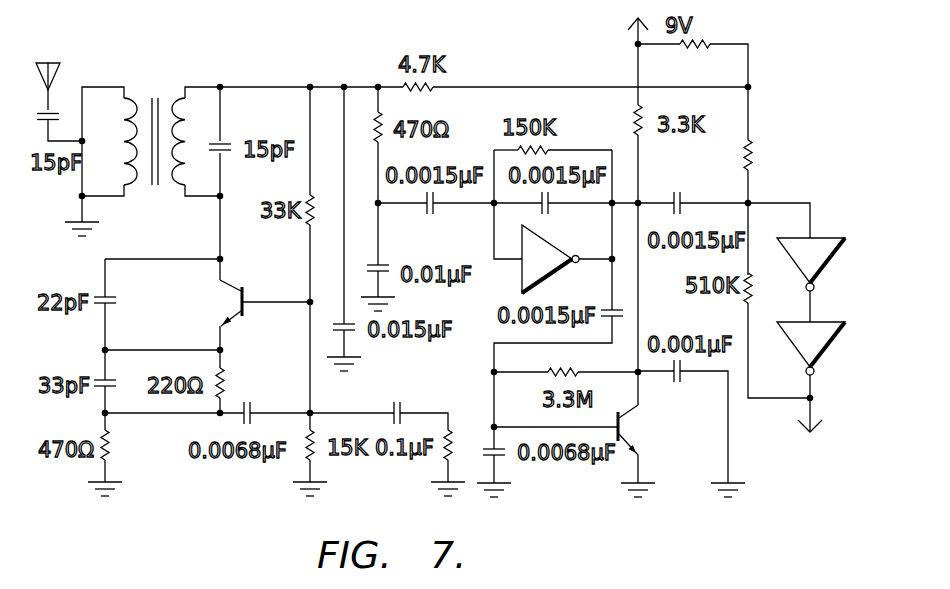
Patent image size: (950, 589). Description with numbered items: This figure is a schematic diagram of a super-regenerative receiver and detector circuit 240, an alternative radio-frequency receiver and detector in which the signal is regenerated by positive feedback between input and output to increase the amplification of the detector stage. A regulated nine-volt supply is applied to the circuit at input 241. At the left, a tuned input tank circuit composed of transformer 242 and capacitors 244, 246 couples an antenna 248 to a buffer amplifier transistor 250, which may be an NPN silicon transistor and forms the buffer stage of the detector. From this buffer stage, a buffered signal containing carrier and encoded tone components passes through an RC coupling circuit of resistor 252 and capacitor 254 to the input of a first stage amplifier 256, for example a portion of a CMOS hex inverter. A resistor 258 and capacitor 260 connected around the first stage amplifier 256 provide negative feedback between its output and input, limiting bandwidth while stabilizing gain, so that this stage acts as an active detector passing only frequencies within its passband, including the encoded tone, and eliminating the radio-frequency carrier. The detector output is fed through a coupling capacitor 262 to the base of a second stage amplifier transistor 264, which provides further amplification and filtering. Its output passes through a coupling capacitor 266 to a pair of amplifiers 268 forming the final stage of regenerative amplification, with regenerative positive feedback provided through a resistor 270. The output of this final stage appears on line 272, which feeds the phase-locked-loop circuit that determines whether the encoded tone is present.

The super-regenerative receiver and detector circuit 240 is at (776, 136).
The input 241 is at (636, 43).
The transformer 242 is at (137, 100).
The capacitor 244 is at (58, 110).
The capacitor 246 is at (227, 137).
The antenna 248 is at (50, 103).
The buffer amplifier transistor 250 is at (246, 291).
The resistor 252 is at (372, 118).
The capacitor 254 is at (433, 214).
The first stage amplifier 256 is at (522, 278).
The resistor 258 is at (545, 150).
The capacitor 260 is at (540, 213).
The coupling capacitor 262 is at (620, 305).
The second stage amplifier transistor 264 is at (640, 463).
The coupling capacitor 266 is at (683, 196).
The amplifiers 268 is at (818, 237).
The resistor 270 is at (745, 299).
The line 272 is at (798, 410).